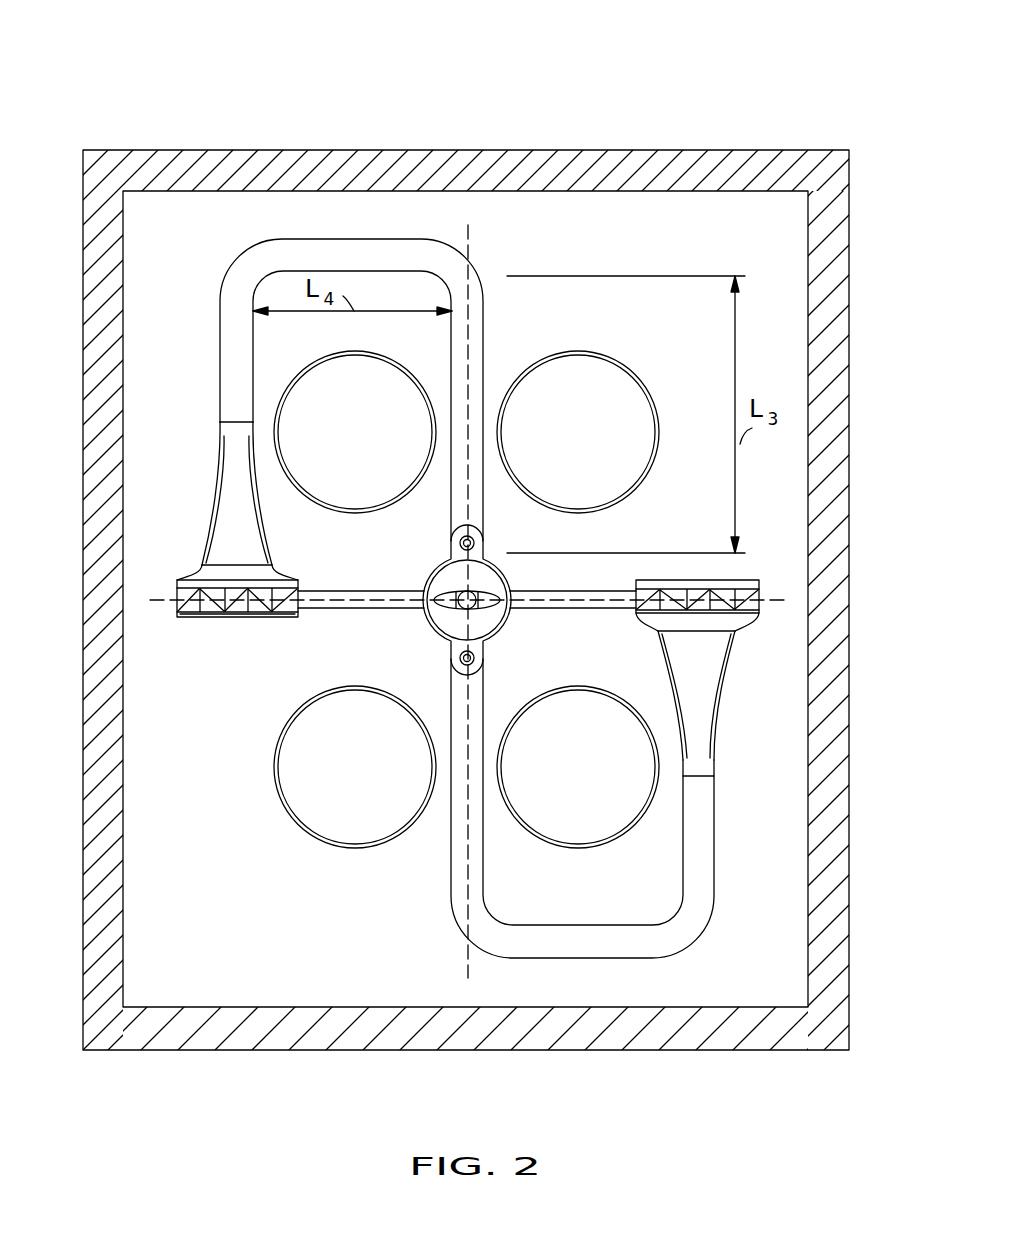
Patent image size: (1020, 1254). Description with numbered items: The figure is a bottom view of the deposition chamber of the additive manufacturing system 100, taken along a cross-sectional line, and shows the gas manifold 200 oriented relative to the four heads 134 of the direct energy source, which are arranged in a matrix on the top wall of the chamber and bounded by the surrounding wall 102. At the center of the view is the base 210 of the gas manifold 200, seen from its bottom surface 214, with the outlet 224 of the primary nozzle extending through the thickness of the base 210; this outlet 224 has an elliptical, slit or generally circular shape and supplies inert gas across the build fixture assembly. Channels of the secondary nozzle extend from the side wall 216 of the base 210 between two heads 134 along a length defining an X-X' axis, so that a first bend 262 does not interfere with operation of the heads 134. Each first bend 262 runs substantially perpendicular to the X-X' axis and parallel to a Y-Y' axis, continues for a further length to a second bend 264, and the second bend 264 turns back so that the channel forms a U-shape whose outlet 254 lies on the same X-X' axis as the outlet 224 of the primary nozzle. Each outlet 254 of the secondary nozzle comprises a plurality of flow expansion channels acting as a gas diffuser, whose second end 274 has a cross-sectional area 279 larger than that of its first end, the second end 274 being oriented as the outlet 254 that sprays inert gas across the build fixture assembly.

The additive manufacturing system 100 is at (113, 72).
The housing wall 102 is at (850, 570).
The heads 134 is at (333, 447).
The gas manifold 200 is at (716, 852).
The base 210 is at (430, 627).
The bottom surface 214 is at (487, 622).
The side wall 216 is at (428, 562).
The outlet 224 is at (490, 592).
The outlet 254 is at (178, 612).
The first bend 262 is at (477, 270).
The second bend 264 is at (247, 252).
The second end 274 is at (258, 604).
The cross-sectional area 279 is at (213, 618).